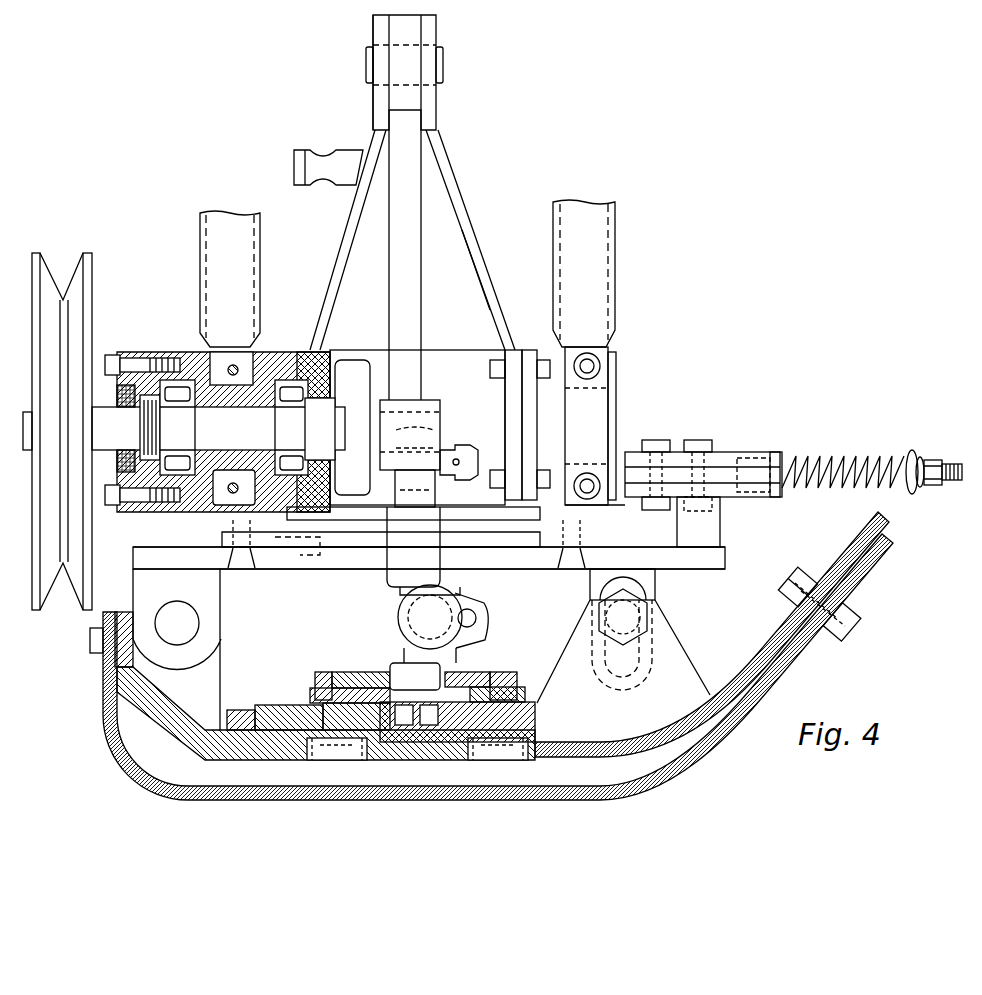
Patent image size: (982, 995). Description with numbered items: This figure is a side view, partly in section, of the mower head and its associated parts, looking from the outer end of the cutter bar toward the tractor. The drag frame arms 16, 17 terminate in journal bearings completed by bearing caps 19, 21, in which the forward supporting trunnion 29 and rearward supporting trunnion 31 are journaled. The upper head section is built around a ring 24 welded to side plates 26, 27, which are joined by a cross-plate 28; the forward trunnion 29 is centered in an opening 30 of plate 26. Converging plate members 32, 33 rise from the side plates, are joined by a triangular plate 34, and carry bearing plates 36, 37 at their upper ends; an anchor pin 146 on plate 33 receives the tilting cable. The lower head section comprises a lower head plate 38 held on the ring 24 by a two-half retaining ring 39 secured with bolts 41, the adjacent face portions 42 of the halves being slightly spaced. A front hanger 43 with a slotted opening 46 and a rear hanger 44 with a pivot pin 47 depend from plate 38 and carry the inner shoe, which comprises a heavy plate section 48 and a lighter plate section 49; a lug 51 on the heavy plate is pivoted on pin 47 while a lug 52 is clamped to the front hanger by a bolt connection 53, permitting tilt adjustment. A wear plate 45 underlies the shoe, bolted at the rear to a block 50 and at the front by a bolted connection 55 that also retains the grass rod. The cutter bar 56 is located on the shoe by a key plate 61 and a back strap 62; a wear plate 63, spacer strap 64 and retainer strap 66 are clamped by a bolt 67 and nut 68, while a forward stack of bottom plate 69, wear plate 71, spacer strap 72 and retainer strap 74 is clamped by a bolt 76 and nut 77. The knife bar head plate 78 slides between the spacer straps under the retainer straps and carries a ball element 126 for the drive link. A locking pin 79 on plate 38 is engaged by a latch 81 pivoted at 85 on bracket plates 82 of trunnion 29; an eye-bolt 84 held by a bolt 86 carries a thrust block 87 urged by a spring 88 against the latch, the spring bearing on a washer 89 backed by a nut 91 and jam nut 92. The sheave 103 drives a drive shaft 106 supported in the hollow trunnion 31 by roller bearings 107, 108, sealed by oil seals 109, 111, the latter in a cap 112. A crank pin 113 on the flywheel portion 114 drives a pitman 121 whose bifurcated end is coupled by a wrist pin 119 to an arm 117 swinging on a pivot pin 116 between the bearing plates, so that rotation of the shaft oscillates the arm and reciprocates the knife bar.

The drag frame arm 16 is at (615, 253).
The drag frame arm 17 is at (200, 237).
The bearing cap 19 is at (595, 514).
The bearing cap 21 is at (234, 506).
The ring 24 is at (312, 554).
The forward side plate 26 is at (505, 400).
The rearward side plate 27 is at (303, 352).
The cross-plate 28 is at (458, 356).
The forward supporting trunnion 29 is at (565, 362).
The opening 30 is at (516, 352).
The rearward supporting trunnion 31 is at (196, 354).
The converging plate member 32 is at (466, 220).
The converging plate member 33 is at (349, 229).
The triangular plate 34 is at (480, 292).
The bearing plate 36 is at (436, 34).
The bearing plate 37 is at (373, 33).
The lower head plate 38 is at (725, 559).
The retaining ring 39 is at (283, 528).
The bolts 41 is at (570, 574).
The face portions 42 is at (430, 543).
The front hanger 43 is at (655, 585).
The rear hanger 44 is at (221, 606).
The wear plate 45 is at (704, 765).
The slotted opening 46 is at (645, 682).
The pivot pin 47 is at (174, 603).
The heavy plate section 48 is at (253, 760).
The lighter plate section 49 is at (591, 745).
The block 50 is at (126, 612).
The lug 51 is at (222, 679).
The lug 52 is at (689, 651).
The bolt connection 53 is at (660, 616).
The bolted connection 55 is at (858, 537).
The cutter bar 56 is at (285, 706).
The key plate 61 is at (378, 760).
The back strap 62 is at (238, 710).
The wear plate 63 is at (404, 715).
The spacer strap 64 is at (306, 690).
The retainer strap 66 is at (318, 674).
The bolt 67 is at (357, 674).
The nut 68 is at (326, 761).
The bottom plate 69 is at (535, 720).
The wear plate 71 is at (429, 715).
The spacer strap 72 is at (520, 691).
The retainer strap 74 is at (470, 674).
The bolt 76 is at (500, 672).
The nut 77 is at (517, 760).
The head plate 78 is at (415, 676).
The locking pin 79 is at (677, 532).
The latch 81 is at (742, 498).
The bracket plate members 82 is at (633, 498).
The eye-bolt 84 is at (956, 481).
The pivot connection 85 is at (670, 436).
The bolt 86 is at (700, 441).
The thrust block 87 is at (782, 456).
The spring 88 is at (845, 456).
The washer 89 is at (912, 450).
The nut 91 is at (921, 488).
The jam nut 92 is at (940, 460).
The sheave 103 is at (32, 275).
The drive shaft 106 is at (23, 427).
The roller bearing 107 is at (291, 427).
The roller bearing 108 is at (176, 406).
The oil seal 109 is at (320, 429).
The oil seal 111 is at (126, 412).
The cap 112 is at (125, 355).
The crank pin 113 is at (462, 466).
The flywheel portion 114 is at (355, 362).
The pivot pin 116 is at (443, 66).
The arm 117 is at (422, 288).
The wrist pin 119 is at (432, 430).
The pitman 121 is at (428, 402).
The ball element 126 is at (445, 588).
The anchor pin 146 is at (346, 160).